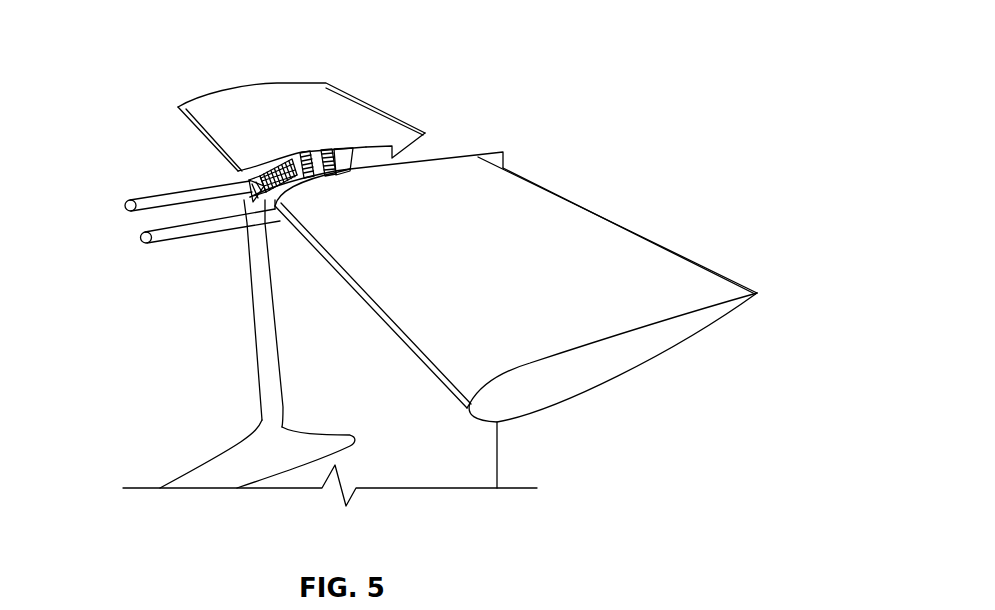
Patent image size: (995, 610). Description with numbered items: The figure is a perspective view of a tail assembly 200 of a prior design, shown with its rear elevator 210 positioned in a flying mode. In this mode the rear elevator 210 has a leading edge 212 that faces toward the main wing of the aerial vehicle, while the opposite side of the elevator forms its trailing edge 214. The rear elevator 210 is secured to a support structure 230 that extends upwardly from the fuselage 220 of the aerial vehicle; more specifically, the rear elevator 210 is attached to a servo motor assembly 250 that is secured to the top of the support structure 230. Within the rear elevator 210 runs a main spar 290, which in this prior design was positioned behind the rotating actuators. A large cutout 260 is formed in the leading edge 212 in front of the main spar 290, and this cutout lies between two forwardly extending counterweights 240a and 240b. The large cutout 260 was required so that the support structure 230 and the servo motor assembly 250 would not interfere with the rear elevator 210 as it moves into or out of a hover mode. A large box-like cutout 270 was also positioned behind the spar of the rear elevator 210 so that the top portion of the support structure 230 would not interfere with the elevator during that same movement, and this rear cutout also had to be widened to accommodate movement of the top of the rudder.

The tail assembly 200 is at (552, 66).
The rear elevator 210 is at (516, 345).
The leading edge 212 is at (450, 398).
The trailing edge 214 is at (662, 247).
The fuselage 220 is at (230, 470).
The support structure 230 is at (310, 350).
The forwardly extending counterweight 240a is at (142, 198).
The forwardly extending counterweight 240b is at (152, 244).
The servo motor assembly 250 is at (277, 172).
The large cutout 260 is at (210, 204).
The box-like cutout 270 is at (432, 146).
The main spar 290 is at (333, 159).